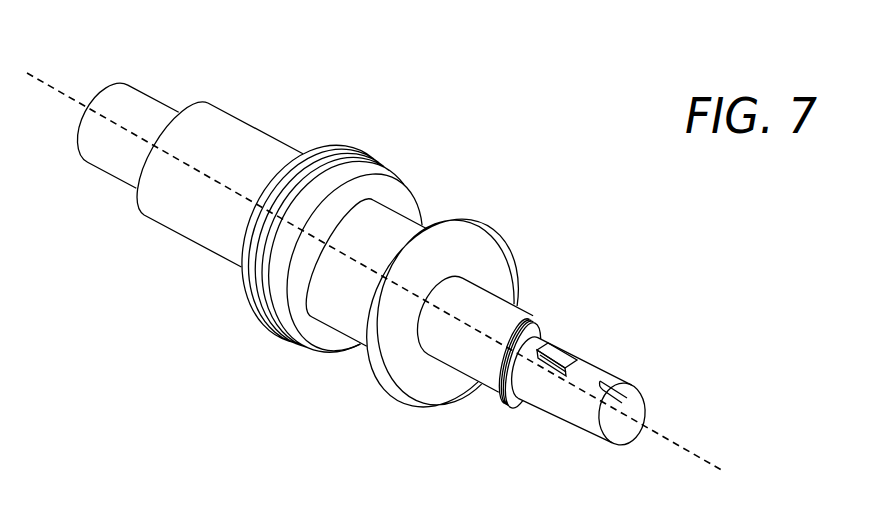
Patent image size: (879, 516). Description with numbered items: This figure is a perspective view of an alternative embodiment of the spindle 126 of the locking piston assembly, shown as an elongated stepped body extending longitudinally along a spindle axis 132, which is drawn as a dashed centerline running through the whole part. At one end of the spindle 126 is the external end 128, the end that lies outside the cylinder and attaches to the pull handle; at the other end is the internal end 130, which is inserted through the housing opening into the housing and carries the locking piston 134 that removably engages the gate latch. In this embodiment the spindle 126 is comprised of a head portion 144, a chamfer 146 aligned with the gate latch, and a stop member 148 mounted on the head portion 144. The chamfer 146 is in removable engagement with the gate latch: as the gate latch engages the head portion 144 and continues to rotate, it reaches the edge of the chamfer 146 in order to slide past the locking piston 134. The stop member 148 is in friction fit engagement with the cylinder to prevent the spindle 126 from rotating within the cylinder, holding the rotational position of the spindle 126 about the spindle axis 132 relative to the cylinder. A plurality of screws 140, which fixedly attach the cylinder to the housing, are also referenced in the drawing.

The spindle 126 is at (478, 88).
The external end 128 is at (113, 157).
The internal end 130 is at (432, 353).
The spindle axis 132 is at (663, 437).
The locking piston 134 is at (540, 327).
The screws 140 is at (282, 309).
The head portion 144 is at (565, 412).
The chamfer 146 is at (613, 393).
The stop member 148 is at (575, 344).